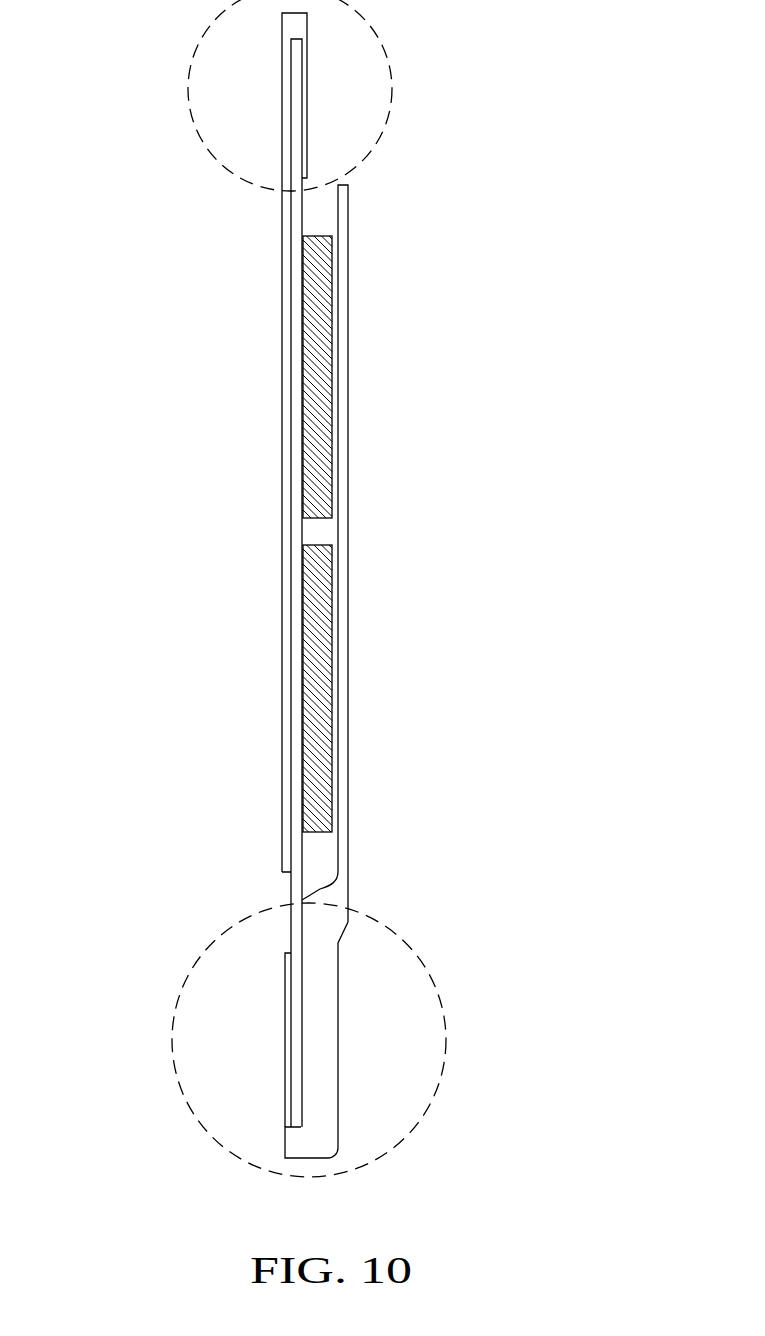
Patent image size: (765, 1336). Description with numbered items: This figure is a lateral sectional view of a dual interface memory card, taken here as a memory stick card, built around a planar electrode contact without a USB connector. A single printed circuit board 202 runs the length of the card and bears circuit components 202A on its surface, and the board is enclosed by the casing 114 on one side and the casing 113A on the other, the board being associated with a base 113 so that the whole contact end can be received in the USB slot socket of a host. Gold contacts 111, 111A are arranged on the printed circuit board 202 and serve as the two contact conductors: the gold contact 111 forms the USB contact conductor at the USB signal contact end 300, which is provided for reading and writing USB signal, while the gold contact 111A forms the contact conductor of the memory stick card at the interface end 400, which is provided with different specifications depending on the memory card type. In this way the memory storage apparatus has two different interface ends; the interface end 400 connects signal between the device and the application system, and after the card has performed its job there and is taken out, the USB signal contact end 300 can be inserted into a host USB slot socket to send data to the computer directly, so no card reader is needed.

The gold contact 111 is at (285, 1034).
The gold contact 111A is at (310, 113).
The base 113 is at (321, 1011).
The casing 113A is at (346, 530).
The casing 114 is at (285, 528).
The printed circuit board 202 is at (293, 892).
The circuit components 202A is at (319, 681).
The USB signal contact end 300 is at (205, 1129).
The interface end 400 is at (223, 166).